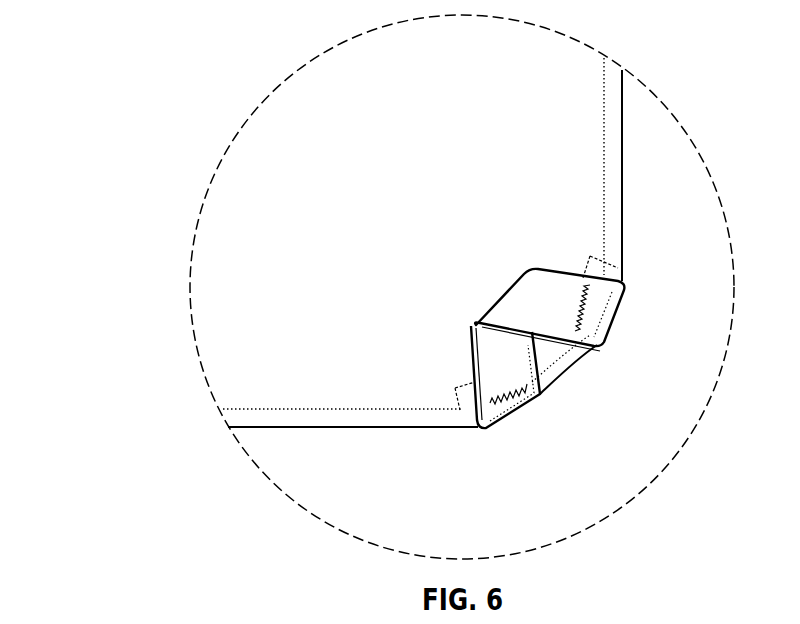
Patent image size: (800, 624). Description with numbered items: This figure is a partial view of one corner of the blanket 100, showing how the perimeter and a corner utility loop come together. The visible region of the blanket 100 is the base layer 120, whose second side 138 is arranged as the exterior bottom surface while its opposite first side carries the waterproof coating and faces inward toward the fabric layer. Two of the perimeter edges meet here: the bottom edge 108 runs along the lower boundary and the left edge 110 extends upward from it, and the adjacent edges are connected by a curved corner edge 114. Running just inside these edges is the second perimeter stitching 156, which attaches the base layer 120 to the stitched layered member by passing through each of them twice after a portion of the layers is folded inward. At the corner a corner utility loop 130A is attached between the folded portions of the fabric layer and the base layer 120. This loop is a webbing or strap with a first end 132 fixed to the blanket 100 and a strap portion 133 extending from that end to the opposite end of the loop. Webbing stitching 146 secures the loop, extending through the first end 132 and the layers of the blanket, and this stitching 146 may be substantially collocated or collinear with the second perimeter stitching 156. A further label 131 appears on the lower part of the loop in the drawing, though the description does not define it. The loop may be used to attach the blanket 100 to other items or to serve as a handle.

The blanket 100 is at (208, 66).
The base layer 120 is at (278, 258).
The second side of the base layer 138 is at (278, 372).
The bottom edge 108 is at (328, 428).
The second perimeter stitching 156 is at (605, 122).
The left edge 110 is at (622, 181).
The first end of the utility loop 132 is at (593, 272).
The webbing stitching 146 is at (605, 305).
The strap portion 133 is at (538, 305).
The corner edge 114 is at (557, 378).
The corner utility loop 130A is at (493, 380).
The zigzag stitching on lower strap portion 131 is at (468, 400).